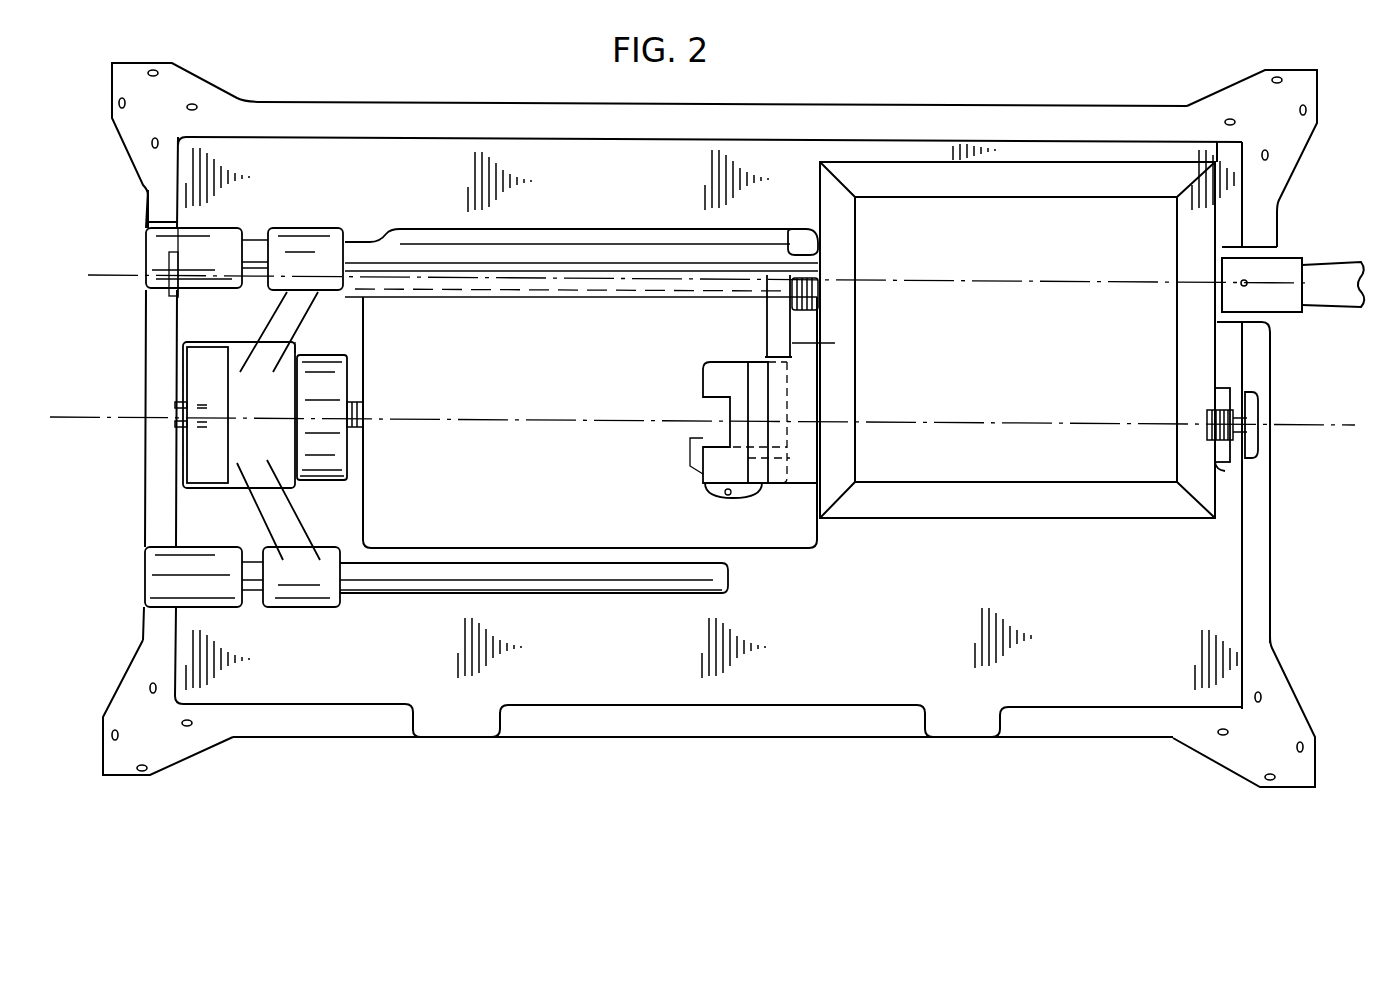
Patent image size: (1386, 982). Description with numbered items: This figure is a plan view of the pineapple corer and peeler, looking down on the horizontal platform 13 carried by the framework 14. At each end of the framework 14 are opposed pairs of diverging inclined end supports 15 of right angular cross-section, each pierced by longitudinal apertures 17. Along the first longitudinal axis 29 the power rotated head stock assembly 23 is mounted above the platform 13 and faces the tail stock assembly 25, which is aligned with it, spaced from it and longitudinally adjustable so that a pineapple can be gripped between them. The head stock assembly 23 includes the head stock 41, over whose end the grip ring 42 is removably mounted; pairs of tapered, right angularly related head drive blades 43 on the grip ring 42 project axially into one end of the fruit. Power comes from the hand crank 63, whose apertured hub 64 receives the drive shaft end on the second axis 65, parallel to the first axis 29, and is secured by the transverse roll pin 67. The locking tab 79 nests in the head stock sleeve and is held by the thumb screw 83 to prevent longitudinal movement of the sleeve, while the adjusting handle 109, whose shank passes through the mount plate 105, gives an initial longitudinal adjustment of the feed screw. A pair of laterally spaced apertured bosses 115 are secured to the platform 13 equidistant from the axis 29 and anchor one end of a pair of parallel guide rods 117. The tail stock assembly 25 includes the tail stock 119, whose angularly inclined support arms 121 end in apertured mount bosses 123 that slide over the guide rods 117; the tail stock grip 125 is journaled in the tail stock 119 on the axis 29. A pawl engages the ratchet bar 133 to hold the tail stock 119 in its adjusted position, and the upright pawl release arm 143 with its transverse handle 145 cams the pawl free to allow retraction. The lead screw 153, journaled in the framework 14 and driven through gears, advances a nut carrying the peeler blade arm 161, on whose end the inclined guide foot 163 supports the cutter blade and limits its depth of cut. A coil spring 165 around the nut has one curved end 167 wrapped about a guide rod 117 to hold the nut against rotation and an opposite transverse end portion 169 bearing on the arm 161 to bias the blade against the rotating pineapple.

The horizontal platform 13 is at (372, 688).
The framework 14 is at (1272, 627).
The inclined end supports 15 is at (177, 73).
The longitudinal apertures 17 is at (118, 105).
The head stock assembly 23 is at (703, 352).
The tail stock assembly 25 is at (288, 225).
The first longitudinal axis 29 is at (426, 417).
The head stock 41 is at (757, 368).
The grip ring 42 is at (735, 355).
The head drive blades 43 is at (705, 380).
The hand crank 63 is at (1347, 280).
The apertured hub 64 is at (1300, 260).
The second axis 65 is at (1010, 260).
The transverse roll pin 67 is at (1247, 283).
The locking tab 79 is at (1207, 428).
The thumb screw 83 is at (1215, 390).
The mount plate 105 is at (1225, 467).
The adjusting handle 109 is at (1258, 408).
The apertured bosses 115 is at (218, 247).
The guide rods 117 is at (357, 240).
The tail stock 119 is at (247, 324).
The support arms 121 is at (290, 526).
The mount bosses 123 is at (318, 600).
The tail stock grip 125 is at (330, 355).
The ratchet bar 133 is at (355, 400).
The pawl release arm 143 is at (175, 437).
The transverse handle 145 is at (220, 447).
The lead screw 153 is at (586, 297).
The peeler blade arm 161 is at (775, 302).
The guide foot 163 is at (715, 480).
The coil spring 165 is at (822, 300).
The curved spring end 167 is at (800, 232).
The transverse spring end portion 169 is at (795, 344).